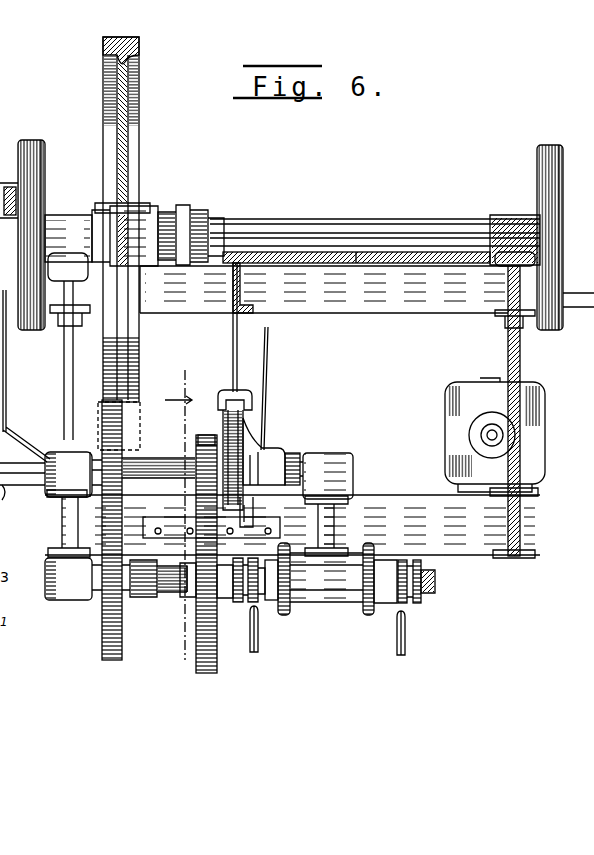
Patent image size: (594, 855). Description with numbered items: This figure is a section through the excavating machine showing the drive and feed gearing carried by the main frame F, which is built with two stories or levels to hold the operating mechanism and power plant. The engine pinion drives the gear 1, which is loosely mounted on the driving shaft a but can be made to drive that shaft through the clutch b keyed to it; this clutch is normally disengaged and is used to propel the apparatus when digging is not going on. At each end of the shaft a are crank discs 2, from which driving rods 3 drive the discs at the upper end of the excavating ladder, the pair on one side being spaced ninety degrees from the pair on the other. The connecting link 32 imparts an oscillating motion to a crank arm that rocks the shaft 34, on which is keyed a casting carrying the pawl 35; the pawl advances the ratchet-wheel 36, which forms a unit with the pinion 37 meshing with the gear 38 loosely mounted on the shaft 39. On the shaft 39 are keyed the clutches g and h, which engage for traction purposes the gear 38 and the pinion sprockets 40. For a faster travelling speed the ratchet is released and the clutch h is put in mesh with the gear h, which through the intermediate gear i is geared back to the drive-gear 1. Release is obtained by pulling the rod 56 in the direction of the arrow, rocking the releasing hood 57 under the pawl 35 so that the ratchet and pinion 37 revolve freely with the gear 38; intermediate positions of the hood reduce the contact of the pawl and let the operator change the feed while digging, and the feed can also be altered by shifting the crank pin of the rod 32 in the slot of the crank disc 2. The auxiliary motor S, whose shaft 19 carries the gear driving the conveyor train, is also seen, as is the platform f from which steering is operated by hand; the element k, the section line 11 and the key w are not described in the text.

The gear 1 is at (138, 102).
The crank disc 2 is at (42, 176).
The driving rod 3 is at (8, 186).
The connecting link 32 is at (4, 385).
The driving shaft a is at (283, 226).
The clutch b is at (186, 205).
The platform f is at (393, 248).
The main frame F is at (432, 300).
The intermediate gear i is at (110, 492).
The gear k is at (110, 614).
The clutch h is at (164, 600).
The clutch g is at (246, 606).
The section line 11 is at (178, 515).
The pinion 37 is at (205, 433).
The gear 38 is at (206, 666).
The rod 56 is at (268, 350).
The pawl 35 is at (252, 410).
The releasing hood 57 is at (262, 440).
The shaft 34 is at (318, 462).
The ratchet-wheel 36 is at (255, 512).
The auxiliary motor or engine S is at (452, 418).
The shaft 19 is at (493, 442).
The pinion sprockets 40 is at (366, 615).
The shaft 39 is at (436, 584).
The key w is at (256, 654).